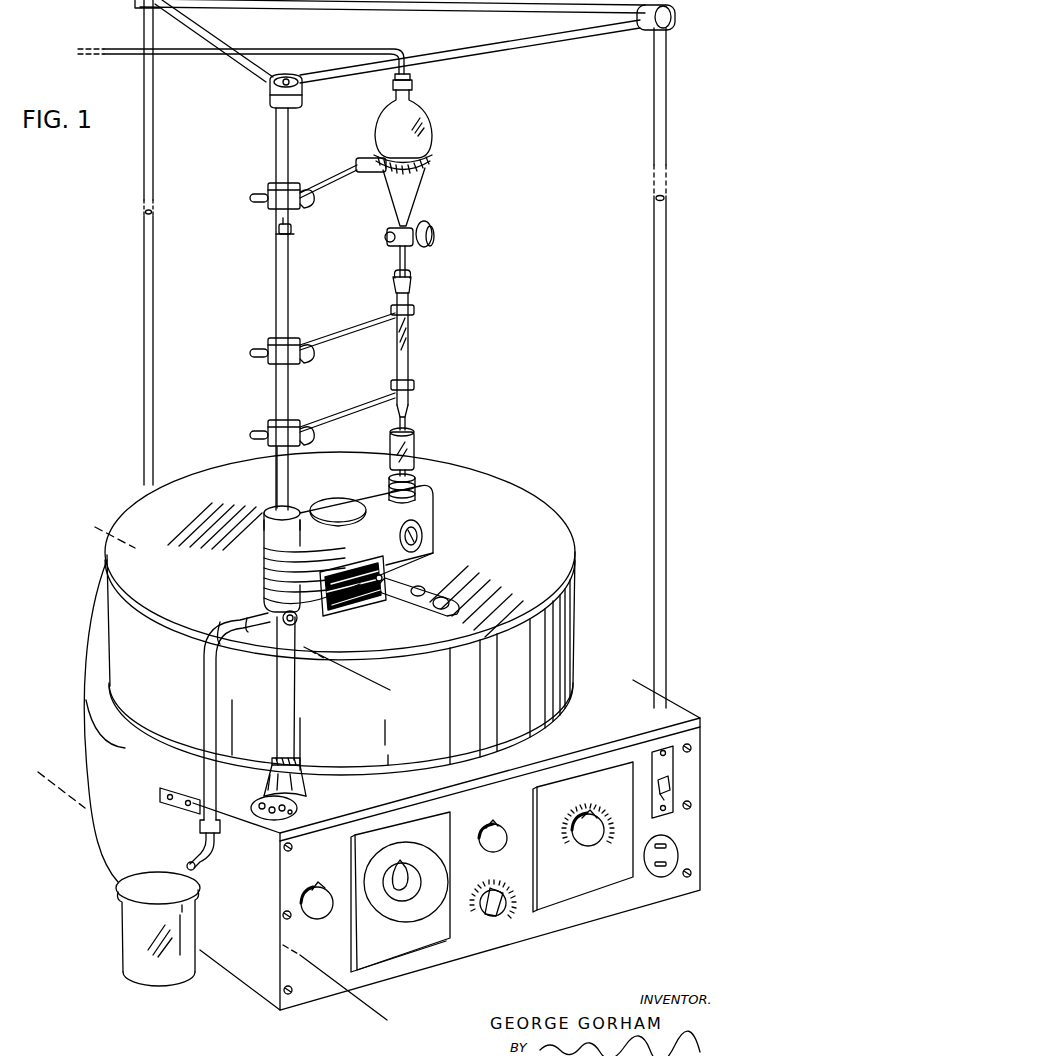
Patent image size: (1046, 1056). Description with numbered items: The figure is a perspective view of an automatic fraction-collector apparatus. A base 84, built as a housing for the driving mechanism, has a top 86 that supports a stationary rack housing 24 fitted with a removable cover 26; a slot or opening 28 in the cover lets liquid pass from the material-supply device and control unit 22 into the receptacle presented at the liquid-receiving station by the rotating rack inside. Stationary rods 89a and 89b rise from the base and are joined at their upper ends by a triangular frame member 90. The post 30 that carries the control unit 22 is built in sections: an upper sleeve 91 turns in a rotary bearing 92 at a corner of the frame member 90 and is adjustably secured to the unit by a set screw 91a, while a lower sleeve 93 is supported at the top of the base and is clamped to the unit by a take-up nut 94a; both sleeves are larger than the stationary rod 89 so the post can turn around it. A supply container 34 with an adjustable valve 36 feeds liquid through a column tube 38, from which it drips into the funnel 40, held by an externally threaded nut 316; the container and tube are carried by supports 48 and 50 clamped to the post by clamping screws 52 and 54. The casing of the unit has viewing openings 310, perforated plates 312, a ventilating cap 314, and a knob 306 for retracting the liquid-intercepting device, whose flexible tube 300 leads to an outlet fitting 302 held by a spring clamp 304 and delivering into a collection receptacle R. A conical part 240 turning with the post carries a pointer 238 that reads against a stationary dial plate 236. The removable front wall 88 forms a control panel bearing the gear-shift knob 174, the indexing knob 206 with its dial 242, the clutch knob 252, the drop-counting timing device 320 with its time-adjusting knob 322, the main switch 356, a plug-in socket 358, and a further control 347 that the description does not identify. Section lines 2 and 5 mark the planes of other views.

The material-supply device and control unit 22 is at (445, 480).
The rack housing 24 is at (584, 596).
The removable cover 26 is at (520, 490).
The slot or opening 28 is at (452, 597).
The post 30 is at (266, 389).
The supply container 34 is at (430, 182).
The adjustable valve 36 is at (425, 250).
The column tube 38 is at (418, 361).
The funnel 40 is at (418, 446).
The support 48 is at (352, 182).
The support 50 is at (340, 332).
The clamping screw 52 is at (306, 210).
The clamping screw 54 is at (304, 358).
The base 84 is at (115, 843).
The top of base housing 86 is at (598, 690).
The removable wall member 88 is at (690, 764).
The stationary rod 89 is at (276, 228).
The stationary rod 89a is at (668, 410).
The stationary rod 89b is at (145, 365).
The triangular frame member 90 is at (521, 60).
The upper tube or sleeve 91 is at (272, 478).
The set screw 91a is at (268, 528).
The rotary bearing 92 is at (272, 104).
The tube or sleeve 93 is at (297, 716).
The take-up nut 94a is at (286, 627).
The rotary control knob 174 is at (503, 848).
The indexing knob 206 is at (488, 924).
The stationary dial plate 236 is at (298, 812).
The pointer 238 is at (283, 772).
The conical member 240 is at (303, 772).
The dial 242 is at (505, 920).
The knob 252 is at (320, 912).
The flexible tube 300 is at (200, 702).
The outlet fitting 302 is at (208, 858).
The releasable spring clamp 304 is at (197, 815).
The knob 306 is at (372, 592).
The viewing openings 310 is at (422, 536).
The perforated plates 312 is at (358, 612).
The ventilating cap 314 is at (345, 503).
The externally threaded nut 316 is at (422, 490).
The timing device 320 is at (415, 950).
The time-adjusting knob 322 is at (412, 885).
The sensitivity knob 347 is at (604, 830).
The main switch 356 is at (672, 790).
The plug-in socket 358 is at (678, 856).
The collection receptacle R is at (152, 975).
The section line 2 is at (72, 504).
The section line 5 is at (45, 764).